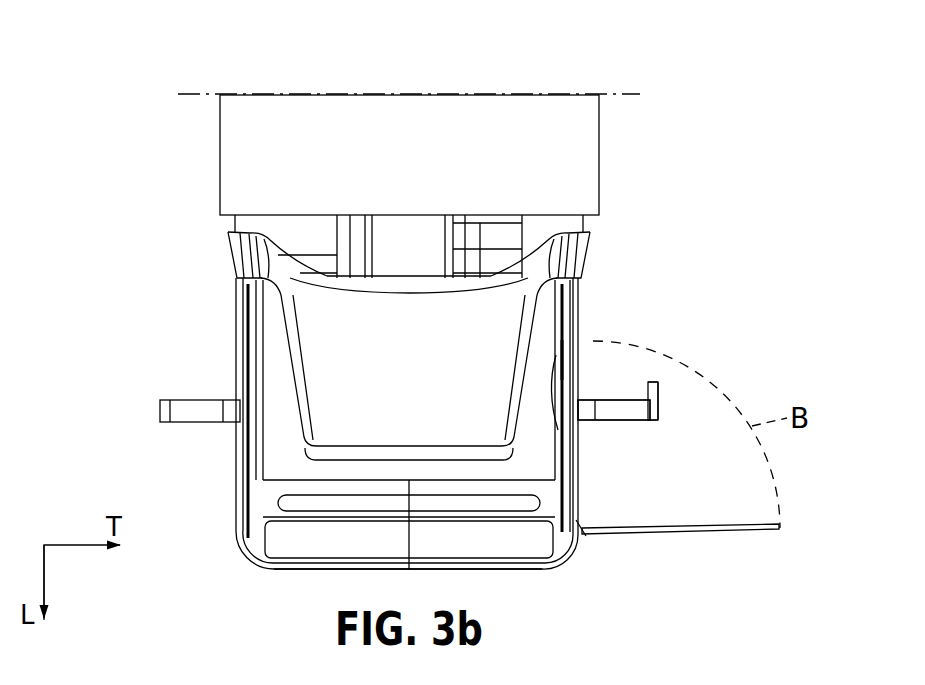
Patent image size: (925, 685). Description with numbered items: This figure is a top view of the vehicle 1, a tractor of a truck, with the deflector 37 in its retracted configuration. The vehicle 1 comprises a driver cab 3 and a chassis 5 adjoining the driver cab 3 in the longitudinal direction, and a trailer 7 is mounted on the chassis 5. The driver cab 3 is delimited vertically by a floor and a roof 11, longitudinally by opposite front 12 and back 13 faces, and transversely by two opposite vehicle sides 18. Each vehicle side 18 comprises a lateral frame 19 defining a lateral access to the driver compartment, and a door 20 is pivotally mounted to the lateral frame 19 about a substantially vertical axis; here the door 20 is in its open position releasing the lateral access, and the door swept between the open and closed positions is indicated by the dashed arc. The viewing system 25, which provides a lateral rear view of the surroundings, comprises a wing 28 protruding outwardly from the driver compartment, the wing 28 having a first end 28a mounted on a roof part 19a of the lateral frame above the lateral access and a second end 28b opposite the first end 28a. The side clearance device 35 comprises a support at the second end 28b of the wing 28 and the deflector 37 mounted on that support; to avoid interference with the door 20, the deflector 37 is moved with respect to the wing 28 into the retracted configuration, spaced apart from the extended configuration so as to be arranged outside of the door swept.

The vehicle 1 is at (162, 129).
The driver cab 3 is at (200, 340).
The chassis 5 is at (455, 245).
The trailer 7 is at (601, 141).
The roof 11 is at (355, 470).
The front face 12 is at (305, 571).
The back face 13 is at (345, 279).
The vehicle side 18 is at (232, 382).
The lateral frame 19 is at (583, 525).
The roof part 19a is at (577, 348).
The door 20 is at (706, 538).
The viewing system 25 is at (689, 397).
The wing 28 is at (618, 412).
The first end 28a is at (593, 398).
The second end 28b is at (650, 425).
The side clearance device 35 is at (671, 427).
The deflector 37 is at (660, 400).